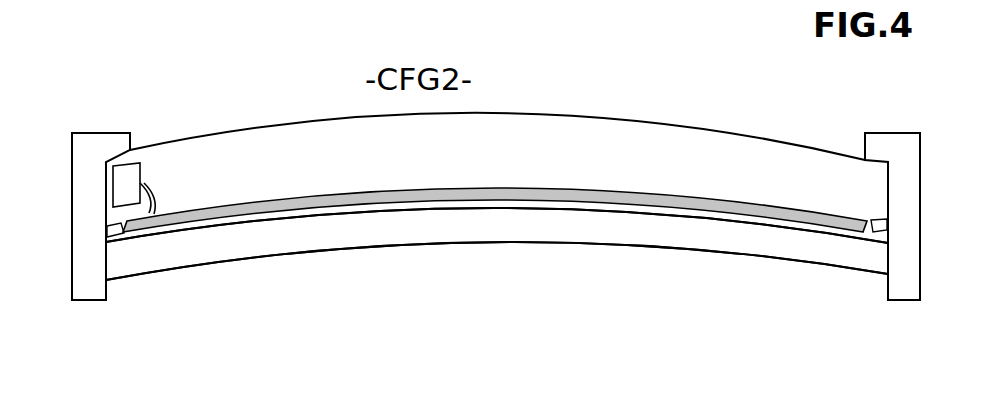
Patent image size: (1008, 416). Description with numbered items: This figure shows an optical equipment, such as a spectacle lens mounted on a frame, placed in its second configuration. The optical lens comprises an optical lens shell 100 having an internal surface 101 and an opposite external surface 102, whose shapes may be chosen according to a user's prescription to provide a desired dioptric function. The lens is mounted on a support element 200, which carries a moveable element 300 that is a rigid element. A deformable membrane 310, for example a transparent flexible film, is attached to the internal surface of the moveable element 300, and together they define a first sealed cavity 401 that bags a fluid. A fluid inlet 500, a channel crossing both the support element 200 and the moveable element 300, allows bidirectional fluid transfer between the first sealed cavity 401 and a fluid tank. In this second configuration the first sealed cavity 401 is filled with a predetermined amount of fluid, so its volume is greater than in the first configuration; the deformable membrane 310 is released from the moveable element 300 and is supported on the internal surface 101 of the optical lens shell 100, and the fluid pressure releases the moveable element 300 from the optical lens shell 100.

The optical lens shell 100 is at (669, 247).
The internal surface 101 is at (294, 232).
The external surface 102 is at (460, 253).
The support element 200 is at (88, 160).
The moveable element 300 is at (676, 138).
The deformable membrane 310 is at (826, 244).
The first sealed cavity 401 is at (541, 206).
The fluid inlet 500 is at (160, 192).